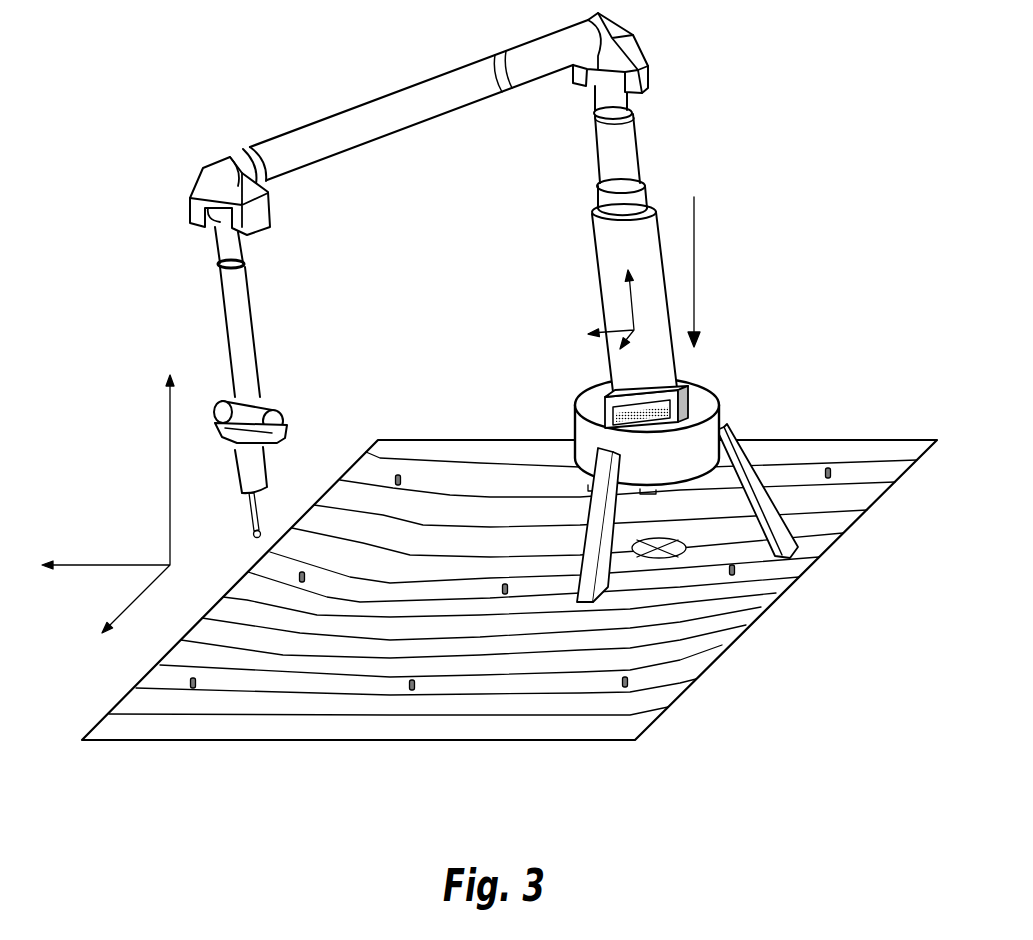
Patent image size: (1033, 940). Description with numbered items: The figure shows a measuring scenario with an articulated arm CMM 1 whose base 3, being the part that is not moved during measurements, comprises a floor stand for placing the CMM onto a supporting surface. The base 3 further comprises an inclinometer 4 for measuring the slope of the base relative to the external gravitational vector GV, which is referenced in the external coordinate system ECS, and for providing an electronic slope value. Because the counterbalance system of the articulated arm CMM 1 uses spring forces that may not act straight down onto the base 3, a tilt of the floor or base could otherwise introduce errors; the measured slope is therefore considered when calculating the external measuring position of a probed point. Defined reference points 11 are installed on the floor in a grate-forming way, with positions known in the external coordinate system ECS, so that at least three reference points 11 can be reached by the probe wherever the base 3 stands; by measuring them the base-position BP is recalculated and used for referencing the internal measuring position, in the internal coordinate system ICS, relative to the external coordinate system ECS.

The articulated arm CMM 1 is at (218, 82).
The base 3 is at (722, 427).
The inclinometer 4 is at (690, 381).
The reference points 11 is at (587, 682).
The external coordinate system ECS is at (133, 492).
The internal coordinate system ICS is at (595, 310).
The gravitational vector GV is at (655, 257).
The base-position BP is at (645, 556).